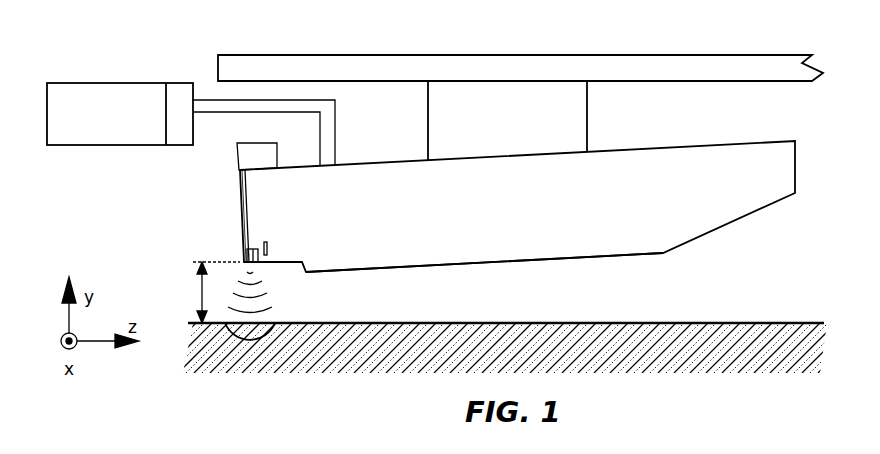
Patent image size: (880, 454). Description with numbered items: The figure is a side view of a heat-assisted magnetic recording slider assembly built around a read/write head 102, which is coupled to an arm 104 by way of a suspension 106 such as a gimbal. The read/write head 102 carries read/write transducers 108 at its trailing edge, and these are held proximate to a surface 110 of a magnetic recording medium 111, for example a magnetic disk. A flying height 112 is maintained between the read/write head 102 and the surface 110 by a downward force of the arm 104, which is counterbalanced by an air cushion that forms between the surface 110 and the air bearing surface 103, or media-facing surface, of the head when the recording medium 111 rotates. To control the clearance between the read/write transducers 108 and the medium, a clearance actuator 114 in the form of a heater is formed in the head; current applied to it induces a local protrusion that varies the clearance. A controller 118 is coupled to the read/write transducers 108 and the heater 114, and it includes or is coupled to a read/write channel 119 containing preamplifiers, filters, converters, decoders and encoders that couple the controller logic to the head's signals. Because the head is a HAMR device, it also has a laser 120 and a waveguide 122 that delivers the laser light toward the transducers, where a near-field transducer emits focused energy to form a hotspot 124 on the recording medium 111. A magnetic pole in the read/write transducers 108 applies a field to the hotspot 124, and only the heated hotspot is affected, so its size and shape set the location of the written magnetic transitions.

The read/write head 102 is at (703, 152).
The air bearing surface 103 is at (392, 272).
The arm 104 is at (750, 62).
The suspension 106 is at (587, 114).
The read/write transducers 108 is at (250, 258).
The surface 110 is at (707, 322).
The magnetic recording medium 111 is at (717, 363).
The flying height 112 is at (201, 292).
The clearance actuator 114 is at (263, 244).
The controller 118 is at (101, 83).
The read/write channel 119 is at (176, 83).
The laser 120 is at (258, 150).
The waveguide 122 is at (243, 192).
The hotspot 124 is at (270, 325).